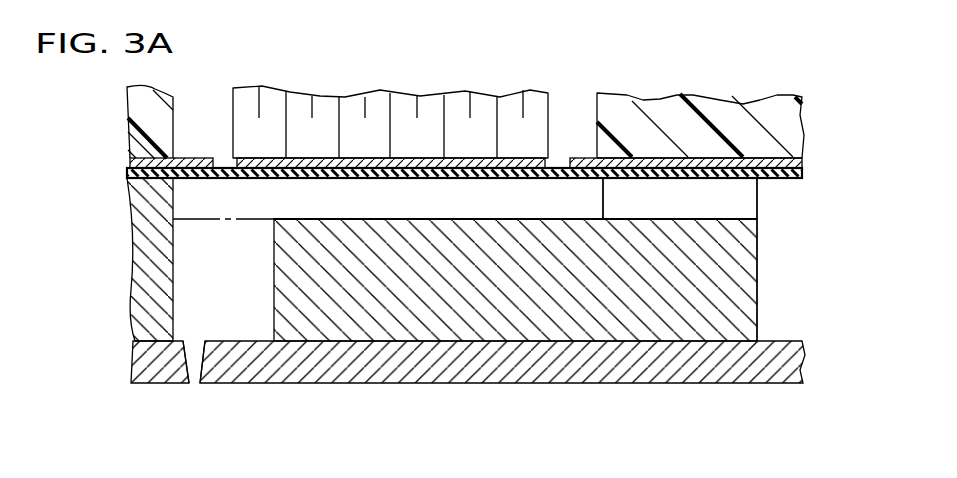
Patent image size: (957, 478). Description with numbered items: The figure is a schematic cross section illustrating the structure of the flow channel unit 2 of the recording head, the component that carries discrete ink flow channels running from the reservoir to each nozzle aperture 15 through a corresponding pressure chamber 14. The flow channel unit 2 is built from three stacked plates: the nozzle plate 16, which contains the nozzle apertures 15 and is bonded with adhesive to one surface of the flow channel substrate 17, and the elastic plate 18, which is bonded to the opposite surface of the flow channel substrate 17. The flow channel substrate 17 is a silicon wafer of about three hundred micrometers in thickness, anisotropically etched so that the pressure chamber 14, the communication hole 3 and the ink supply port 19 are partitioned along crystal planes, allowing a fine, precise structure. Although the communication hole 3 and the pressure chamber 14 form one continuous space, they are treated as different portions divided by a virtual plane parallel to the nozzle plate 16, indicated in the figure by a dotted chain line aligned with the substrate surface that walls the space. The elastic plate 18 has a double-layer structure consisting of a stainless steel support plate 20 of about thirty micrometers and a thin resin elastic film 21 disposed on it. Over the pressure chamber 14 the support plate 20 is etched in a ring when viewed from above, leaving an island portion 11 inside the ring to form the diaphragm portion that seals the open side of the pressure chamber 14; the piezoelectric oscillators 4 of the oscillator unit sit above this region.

The flow channel unit 2 is at (569, 126).
The communication hole 3 is at (237, 295).
The piezoelectric oscillator 4 is at (401, 108).
The island portion 11 is at (318, 163).
The pressure chamber 14 is at (433, 205).
The nozzle aperture 15 is at (205, 343).
The nozzle plate 16 is at (757, 367).
The flow channel substrate 17 is at (554, 312).
The elastic plate 18 is at (700, 86).
The ink supply port 19 is at (672, 205).
The support plate 20 is at (656, 157).
The elastic film 21 is at (733, 173).